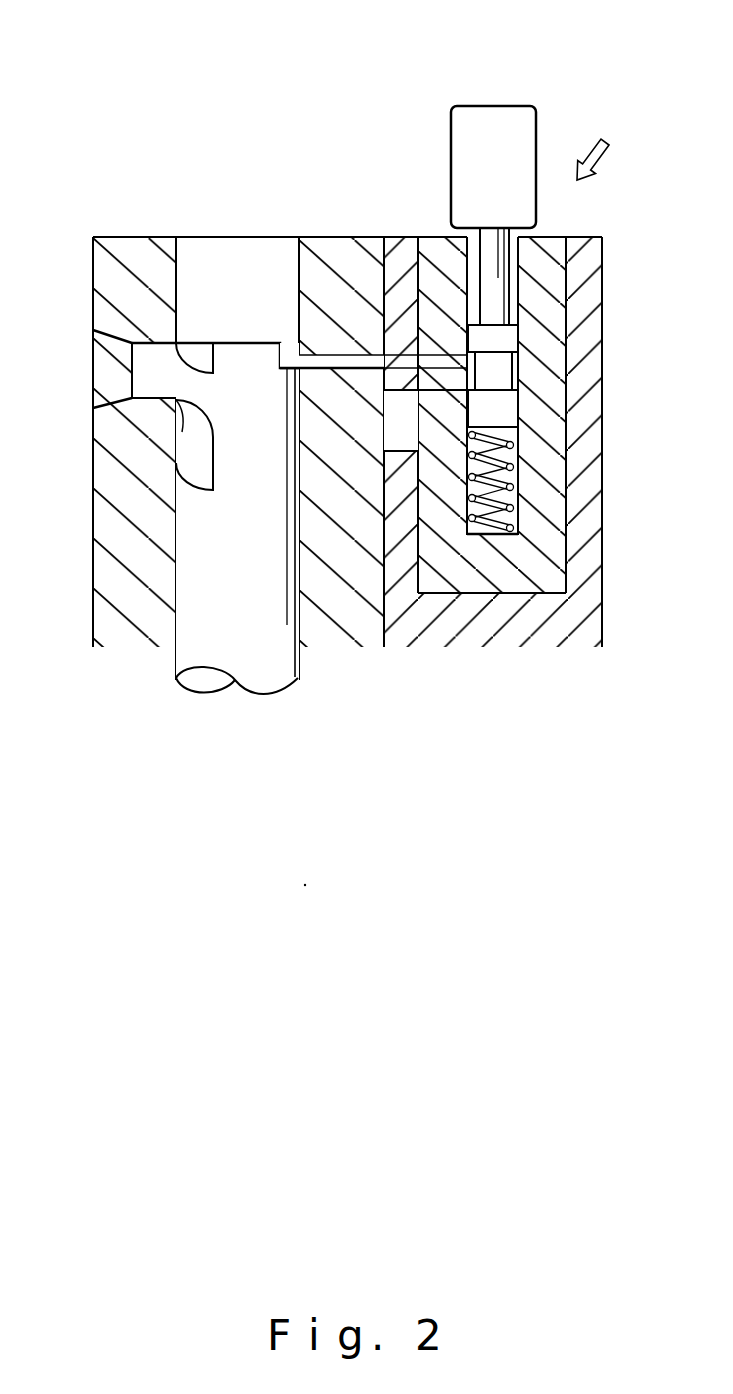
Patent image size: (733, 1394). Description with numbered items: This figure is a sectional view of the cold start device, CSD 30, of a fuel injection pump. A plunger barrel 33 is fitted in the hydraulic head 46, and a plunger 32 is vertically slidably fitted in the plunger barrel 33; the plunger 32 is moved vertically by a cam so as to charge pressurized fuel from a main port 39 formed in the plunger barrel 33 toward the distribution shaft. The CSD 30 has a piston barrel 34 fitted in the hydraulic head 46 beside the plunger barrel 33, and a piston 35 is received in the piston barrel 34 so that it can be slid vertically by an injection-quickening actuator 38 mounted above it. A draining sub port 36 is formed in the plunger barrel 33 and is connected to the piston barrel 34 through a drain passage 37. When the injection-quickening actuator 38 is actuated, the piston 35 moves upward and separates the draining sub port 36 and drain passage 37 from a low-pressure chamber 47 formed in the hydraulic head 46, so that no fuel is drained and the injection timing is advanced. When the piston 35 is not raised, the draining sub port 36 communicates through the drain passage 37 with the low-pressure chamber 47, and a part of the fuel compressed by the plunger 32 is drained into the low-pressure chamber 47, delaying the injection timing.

The cold start device 30 is at (610, 143).
The plunger 32 is at (248, 593).
The plunger barrel 33 is at (133, 237).
The piston barrel 34 is at (436, 237).
The piston 35 is at (508, 337).
The draining sub port 36 is at (290, 352).
The drain passage 37 is at (395, 364).
The injection-quickening actuator 38 is at (500, 106).
The main port 39 is at (132, 398).
The hydraulic head 46 is at (601, 548).
The low-pressure chamber 47 is at (395, 412).